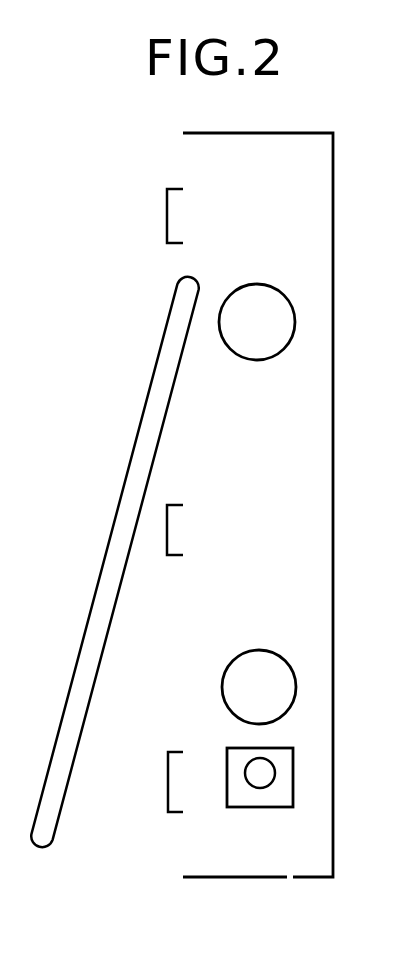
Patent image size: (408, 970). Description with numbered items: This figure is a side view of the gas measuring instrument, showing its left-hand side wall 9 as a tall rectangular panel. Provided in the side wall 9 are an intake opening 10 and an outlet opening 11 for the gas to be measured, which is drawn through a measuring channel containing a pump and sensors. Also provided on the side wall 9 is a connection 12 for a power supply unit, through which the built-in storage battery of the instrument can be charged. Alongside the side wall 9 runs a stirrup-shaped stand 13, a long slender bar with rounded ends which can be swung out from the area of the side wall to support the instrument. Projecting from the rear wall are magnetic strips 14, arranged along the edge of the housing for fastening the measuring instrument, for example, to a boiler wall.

The left-hand side wall 9 is at (242, 878).
The intake opening 10 is at (258, 662).
The outlet opening 11 is at (278, 328).
The connection for a power supply unit 12 is at (283, 790).
The stirrup-shaped stand 13 is at (40, 838).
The magnetic strips 14 is at (170, 222).